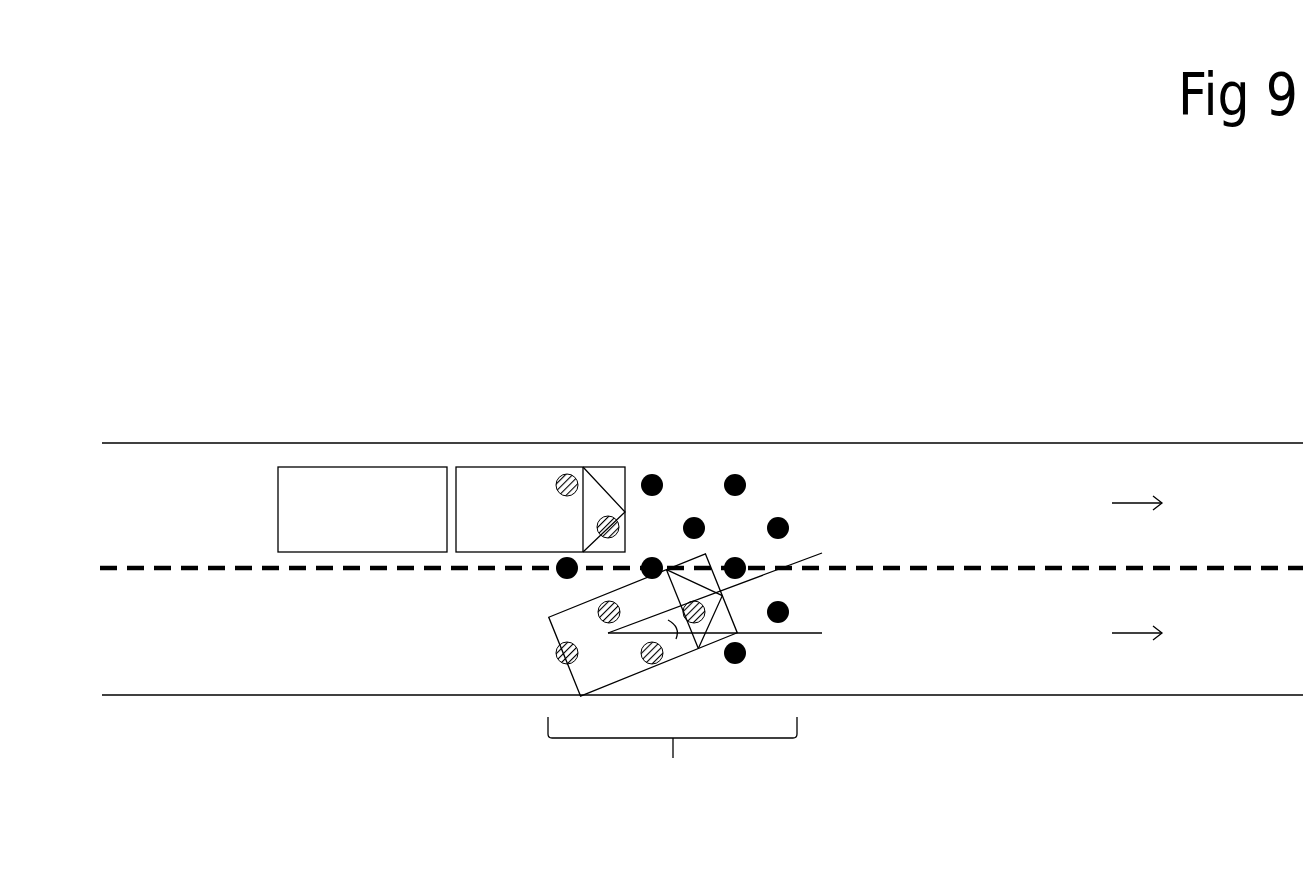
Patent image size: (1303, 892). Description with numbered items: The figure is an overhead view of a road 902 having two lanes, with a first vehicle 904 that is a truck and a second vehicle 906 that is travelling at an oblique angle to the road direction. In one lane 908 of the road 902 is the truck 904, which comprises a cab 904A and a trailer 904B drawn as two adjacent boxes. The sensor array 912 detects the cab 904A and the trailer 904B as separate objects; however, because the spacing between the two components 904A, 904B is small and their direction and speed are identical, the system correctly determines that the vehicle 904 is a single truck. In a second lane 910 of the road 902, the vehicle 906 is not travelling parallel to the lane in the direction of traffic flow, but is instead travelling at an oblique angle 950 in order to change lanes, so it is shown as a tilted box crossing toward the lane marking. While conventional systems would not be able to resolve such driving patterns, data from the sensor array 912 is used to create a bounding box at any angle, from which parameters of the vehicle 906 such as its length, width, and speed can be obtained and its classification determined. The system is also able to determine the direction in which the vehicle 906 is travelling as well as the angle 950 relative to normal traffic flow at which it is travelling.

The road 902 is at (253, 440).
The first vehicle 904 is at (451, 404).
The cab 904A is at (518, 507).
The trailer 904B is at (380, 502).
The second vehicle 906 is at (567, 655).
The lane 908 is at (1105, 504).
The second lane 910 is at (1105, 634).
The sensor array 912 is at (672, 761).
The oblique angle 950 is at (690, 636).